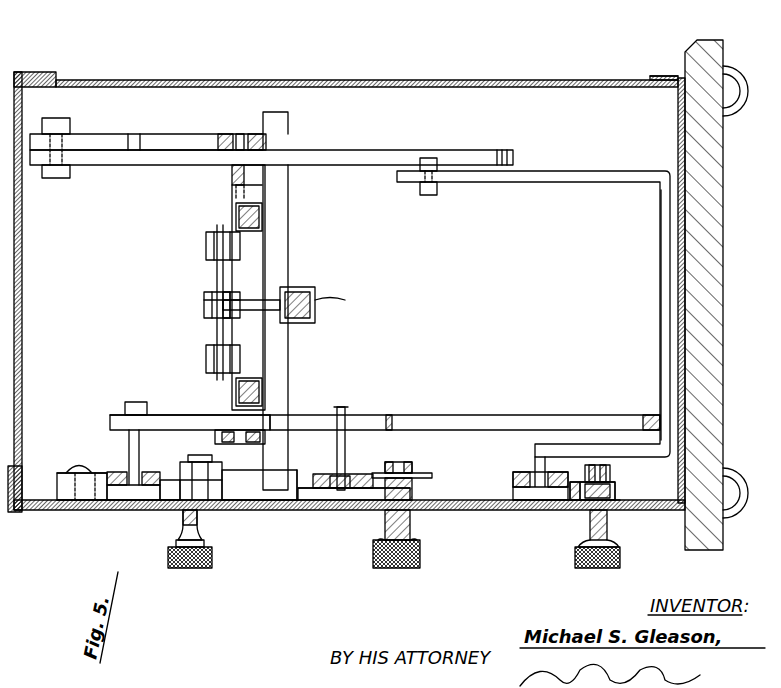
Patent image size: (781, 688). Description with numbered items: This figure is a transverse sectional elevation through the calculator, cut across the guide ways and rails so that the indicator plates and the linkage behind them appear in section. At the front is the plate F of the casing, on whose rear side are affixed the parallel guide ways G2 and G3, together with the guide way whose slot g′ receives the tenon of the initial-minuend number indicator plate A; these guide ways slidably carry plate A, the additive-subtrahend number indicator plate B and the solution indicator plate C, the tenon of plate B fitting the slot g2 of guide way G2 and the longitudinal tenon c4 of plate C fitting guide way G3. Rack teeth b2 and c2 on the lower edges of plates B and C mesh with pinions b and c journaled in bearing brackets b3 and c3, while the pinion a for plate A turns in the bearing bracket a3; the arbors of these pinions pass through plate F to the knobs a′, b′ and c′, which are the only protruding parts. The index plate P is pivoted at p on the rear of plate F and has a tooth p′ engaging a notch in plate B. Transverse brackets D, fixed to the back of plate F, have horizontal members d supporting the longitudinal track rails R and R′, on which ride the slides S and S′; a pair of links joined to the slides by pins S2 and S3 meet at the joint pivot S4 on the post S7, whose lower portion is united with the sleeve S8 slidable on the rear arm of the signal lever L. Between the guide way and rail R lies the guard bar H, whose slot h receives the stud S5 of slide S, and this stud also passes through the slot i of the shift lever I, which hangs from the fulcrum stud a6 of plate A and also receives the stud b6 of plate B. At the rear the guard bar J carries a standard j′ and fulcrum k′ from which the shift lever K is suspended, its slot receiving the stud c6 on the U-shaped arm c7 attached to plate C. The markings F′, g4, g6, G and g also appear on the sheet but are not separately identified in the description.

The front plate F is at (26, 513).
The side plate of frame F′ is at (637, 513).
The lip g4 is at (664, 40).
The guard bar J is at (224, 124).
The fulcrum k′ is at (56, 118).
The standard j′ is at (137, 124).
The shift lever K is at (380, 150).
The U-shaped arm c7 is at (653, 284).
The stud c6 is at (430, 158).
The horizontal member d is at (279, 103).
The track rail R′ is at (272, 205).
The track rail R is at (270, 385).
The slide S′ is at (229, 196).
The slide S is at (208, 312).
The pin S2 is at (208, 355).
The pin S3 is at (210, 242).
The joint pivot S4 is at (208, 300).
The stud S5 is at (210, 277).
The post S7 is at (248, 300).
The sleeve S8 is at (357, 280).
The signal lever L is at (315, 305).
The guard bar H is at (190, 415).
The shift lever I is at (501, 404).
The slot h is at (231, 432).
The bolt g6 is at (133, 394).
The base G is at (82, 486).
The arc member g is at (118, 466).
The slot g′ is at (104, 472).
The transverse bracket D is at (56, 468).
The initial-minuend number indicator plate A is at (90, 512).
The fulcrum stud a6 is at (162, 473).
The index plate P is at (243, 492).
The bearing bracket a3 is at (215, 500).
The pinion a is at (172, 500).
The knob a′ is at (193, 579).
The guide way G2 is at (350, 470).
The slot g2 is at (334, 461).
The pinion b is at (414, 482).
The stud b6 is at (342, 407).
The slot i is at (388, 415).
The bearing bracket b3 is at (412, 466).
The additive-subtrahend number indicator plate B is at (338, 512).
The rack teeth b2 is at (326, 512).
The pivot p is at (300, 512).
The tooth p′ is at (314, 505).
The knob b′ is at (400, 572).
The guide way G3 is at (509, 472).
The solution indicator plate C is at (556, 488).
The rack teeth c2 is at (566, 472).
The bearing bracket c3 is at (586, 478).
The pinion c is at (617, 485).
The longitudinal tenon c4 is at (570, 502).
The knob c′ is at (598, 572).